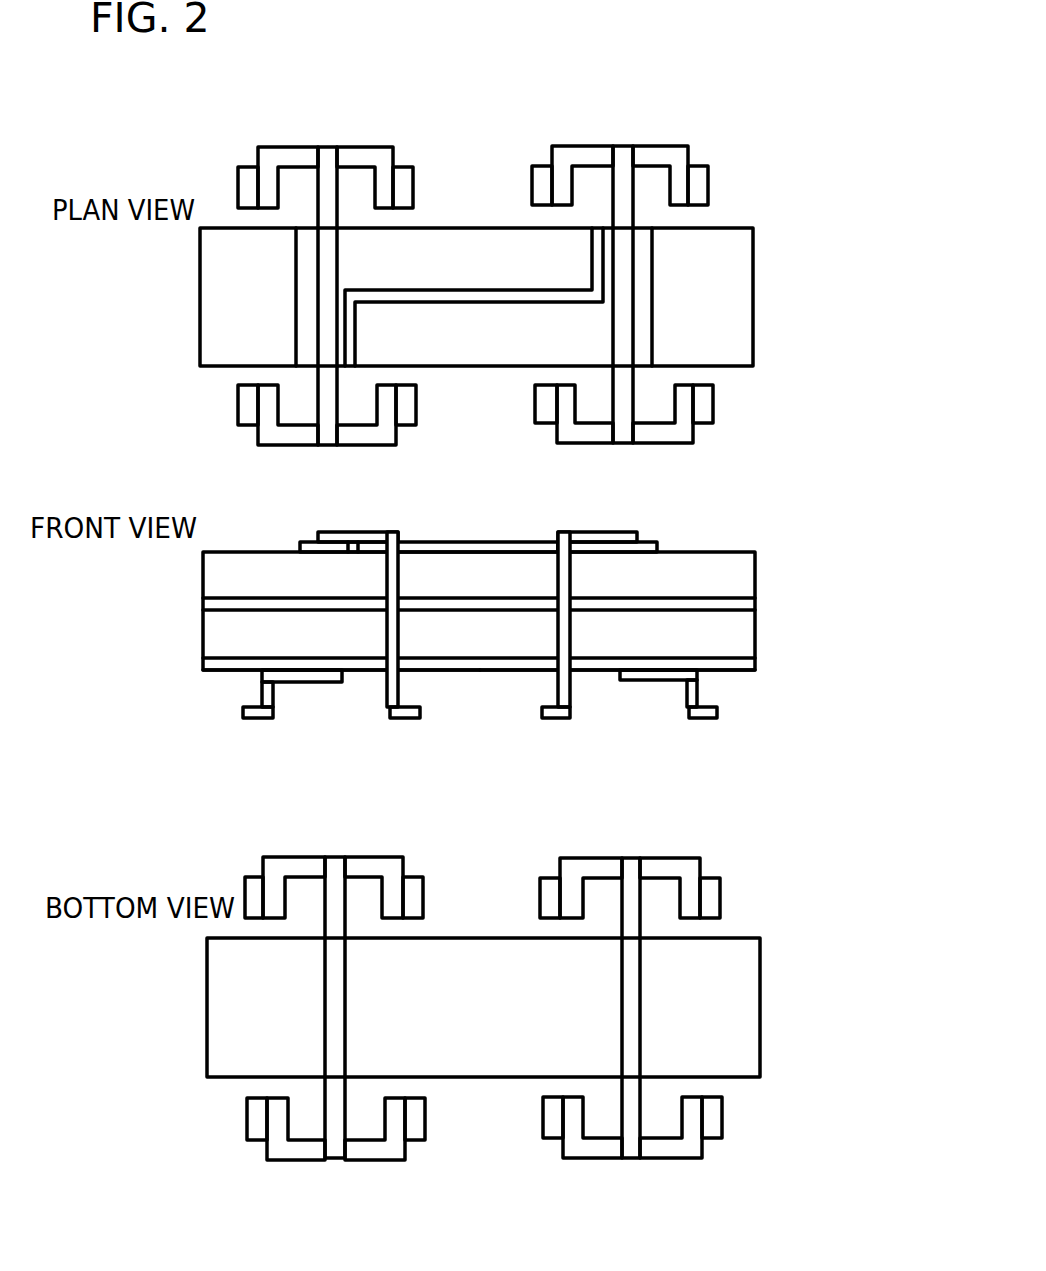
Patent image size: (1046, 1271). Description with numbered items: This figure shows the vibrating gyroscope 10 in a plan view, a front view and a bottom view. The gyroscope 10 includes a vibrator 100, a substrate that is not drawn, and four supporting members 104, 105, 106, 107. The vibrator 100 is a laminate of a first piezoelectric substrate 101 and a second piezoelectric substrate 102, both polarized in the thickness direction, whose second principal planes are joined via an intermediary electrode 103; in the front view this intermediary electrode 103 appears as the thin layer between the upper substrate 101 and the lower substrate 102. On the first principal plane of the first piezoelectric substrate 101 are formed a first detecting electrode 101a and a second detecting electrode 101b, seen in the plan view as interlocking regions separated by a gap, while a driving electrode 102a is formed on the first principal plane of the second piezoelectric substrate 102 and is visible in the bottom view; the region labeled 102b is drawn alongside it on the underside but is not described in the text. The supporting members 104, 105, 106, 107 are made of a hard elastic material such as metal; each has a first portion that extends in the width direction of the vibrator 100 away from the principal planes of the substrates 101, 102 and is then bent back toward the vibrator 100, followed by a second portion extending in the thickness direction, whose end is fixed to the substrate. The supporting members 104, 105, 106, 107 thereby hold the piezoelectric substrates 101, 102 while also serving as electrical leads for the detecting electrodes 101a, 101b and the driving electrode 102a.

The vibrating gyroscope 10 is at (195, 126).
The vibrator 100 is at (728, 243).
The first piezoelectric substrate 101 is at (203, 575).
The first detecting electrode 101a is at (470, 260).
The second detecting electrode 101b is at (500, 338).
The second piezoelectric substrate 102 is at (212, 642).
The driving electrode 102a is at (477, 957).
The second bottom electrode 102b is at (740, 952).
The intermediary electrode 103 is at (203, 605).
The supporting member 104 is at (357, 157).
The supporting member 105 is at (598, 157).
The supporting member 106 is at (292, 157).
The supporting member 107 is at (677, 157).